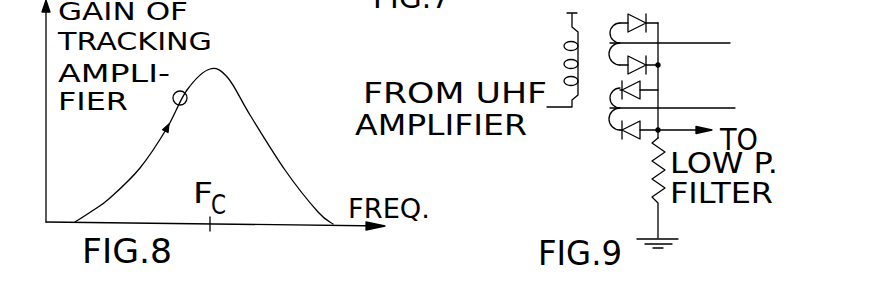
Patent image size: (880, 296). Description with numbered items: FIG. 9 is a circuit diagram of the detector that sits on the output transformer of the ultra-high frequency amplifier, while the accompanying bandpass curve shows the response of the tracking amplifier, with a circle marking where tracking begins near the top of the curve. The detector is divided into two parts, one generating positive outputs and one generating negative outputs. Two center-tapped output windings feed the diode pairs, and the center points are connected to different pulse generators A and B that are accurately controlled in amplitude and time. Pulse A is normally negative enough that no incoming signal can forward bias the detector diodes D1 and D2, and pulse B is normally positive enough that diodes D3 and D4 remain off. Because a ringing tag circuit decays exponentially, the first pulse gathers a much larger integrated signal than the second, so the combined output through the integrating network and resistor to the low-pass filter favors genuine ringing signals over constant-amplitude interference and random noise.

The detector diode D1 is at (656, 19).
The detector diode D2 is at (657, 67).
The diode D3 is at (657, 93).
The diode D4 is at (626, 147).
The pulse generator A is at (684, 47).
The pulse generator B is at (683, 110).